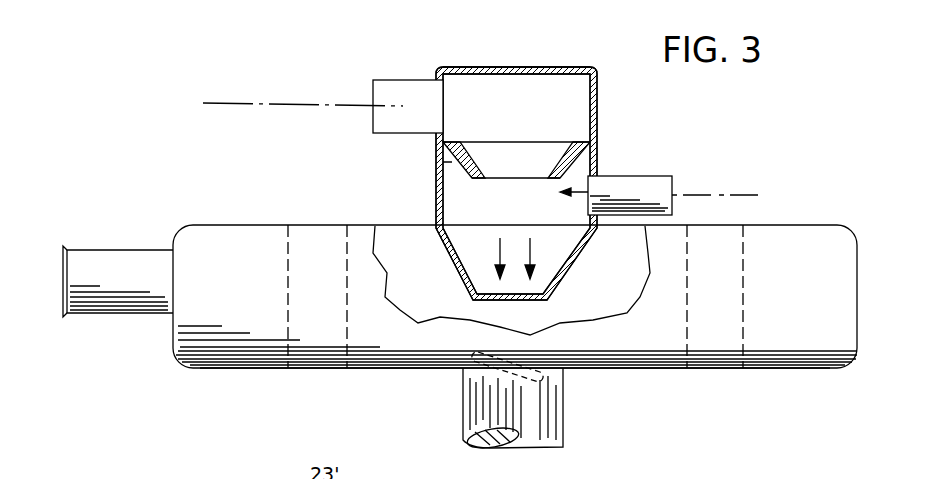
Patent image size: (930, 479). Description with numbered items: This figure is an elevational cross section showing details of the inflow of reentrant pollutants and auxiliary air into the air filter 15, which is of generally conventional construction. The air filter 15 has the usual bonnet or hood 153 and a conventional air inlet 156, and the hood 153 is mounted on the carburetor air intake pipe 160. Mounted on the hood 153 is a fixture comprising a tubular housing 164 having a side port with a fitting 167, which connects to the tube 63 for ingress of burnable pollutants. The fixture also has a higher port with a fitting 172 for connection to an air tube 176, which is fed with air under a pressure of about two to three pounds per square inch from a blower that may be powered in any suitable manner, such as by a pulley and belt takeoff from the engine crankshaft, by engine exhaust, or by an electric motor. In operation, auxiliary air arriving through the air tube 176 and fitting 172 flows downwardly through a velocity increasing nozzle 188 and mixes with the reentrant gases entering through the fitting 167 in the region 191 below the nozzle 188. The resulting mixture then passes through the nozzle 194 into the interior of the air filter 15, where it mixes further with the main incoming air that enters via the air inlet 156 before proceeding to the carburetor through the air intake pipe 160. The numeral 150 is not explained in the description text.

The air filter 15 is at (550, 68).
The tube 63 is at (738, 195).
The reservoir tank 150 is at (240, 223).
The bonnet or hood 153 is at (235, 369).
The air inlet 156 is at (138, 276).
The air intake pipe 160 is at (565, 408).
The tubular housing 164 is at (513, 25).
The fitting 167 is at (660, 180).
The fitting 172 is at (398, 88).
The air tube 176 is at (242, 103).
The velocity increasing nozzle 188 is at (460, 142).
The region 191 is at (540, 208).
The nozzle 194 is at (460, 278).